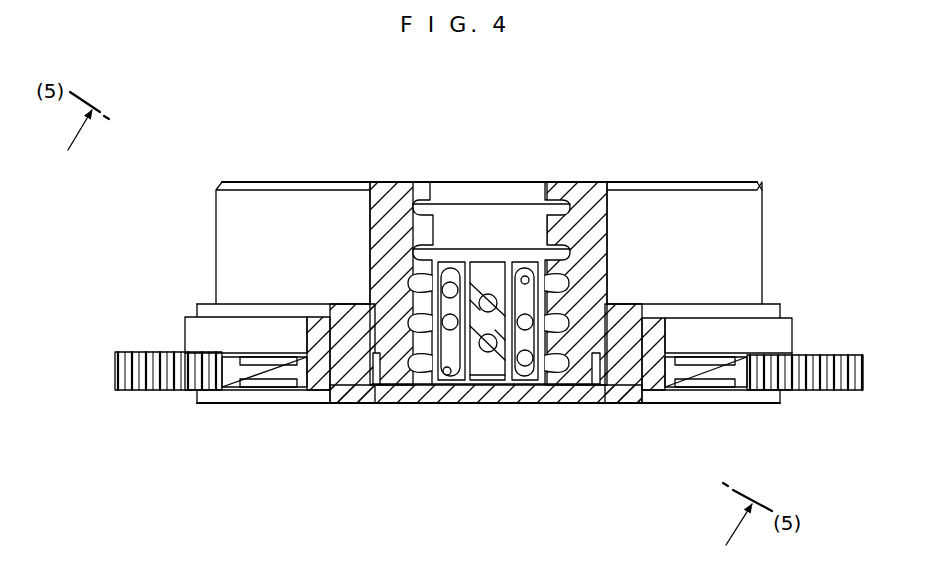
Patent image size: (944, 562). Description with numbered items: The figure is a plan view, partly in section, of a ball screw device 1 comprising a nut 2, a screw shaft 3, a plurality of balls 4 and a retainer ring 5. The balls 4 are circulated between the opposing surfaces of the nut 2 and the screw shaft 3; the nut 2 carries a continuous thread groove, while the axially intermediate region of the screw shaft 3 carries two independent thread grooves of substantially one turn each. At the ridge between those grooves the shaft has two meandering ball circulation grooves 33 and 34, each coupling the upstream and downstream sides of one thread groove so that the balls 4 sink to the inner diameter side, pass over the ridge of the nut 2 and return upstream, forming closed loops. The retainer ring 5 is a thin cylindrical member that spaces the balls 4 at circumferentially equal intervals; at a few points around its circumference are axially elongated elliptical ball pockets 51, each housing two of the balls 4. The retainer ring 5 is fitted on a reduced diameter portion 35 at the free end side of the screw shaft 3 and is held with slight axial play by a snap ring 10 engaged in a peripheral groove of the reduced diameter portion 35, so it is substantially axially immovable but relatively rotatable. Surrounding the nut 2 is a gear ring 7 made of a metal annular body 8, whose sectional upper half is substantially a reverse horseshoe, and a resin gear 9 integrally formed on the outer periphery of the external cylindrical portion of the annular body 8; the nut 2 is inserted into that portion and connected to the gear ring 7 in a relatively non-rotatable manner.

The ball screw device 1 is at (160, 267).
The nut 2 is at (666, 205).
The screw shaft 3 is at (519, 192).
The balls 4 is at (526, 348).
The retainer ring 5 is at (459, 390).
The gear ring 7 is at (257, 395).
The annular body 8 is at (343, 397).
The gear 9 is at (325, 458).
The snap ring 10 is at (531, 248).
The ball circulation groove 33 is at (488, 352).
The ball circulation groove 34 is at (484, 285).
The reduced diameter portion 35 is at (457, 230).
The ball pockets 51 is at (555, 298).